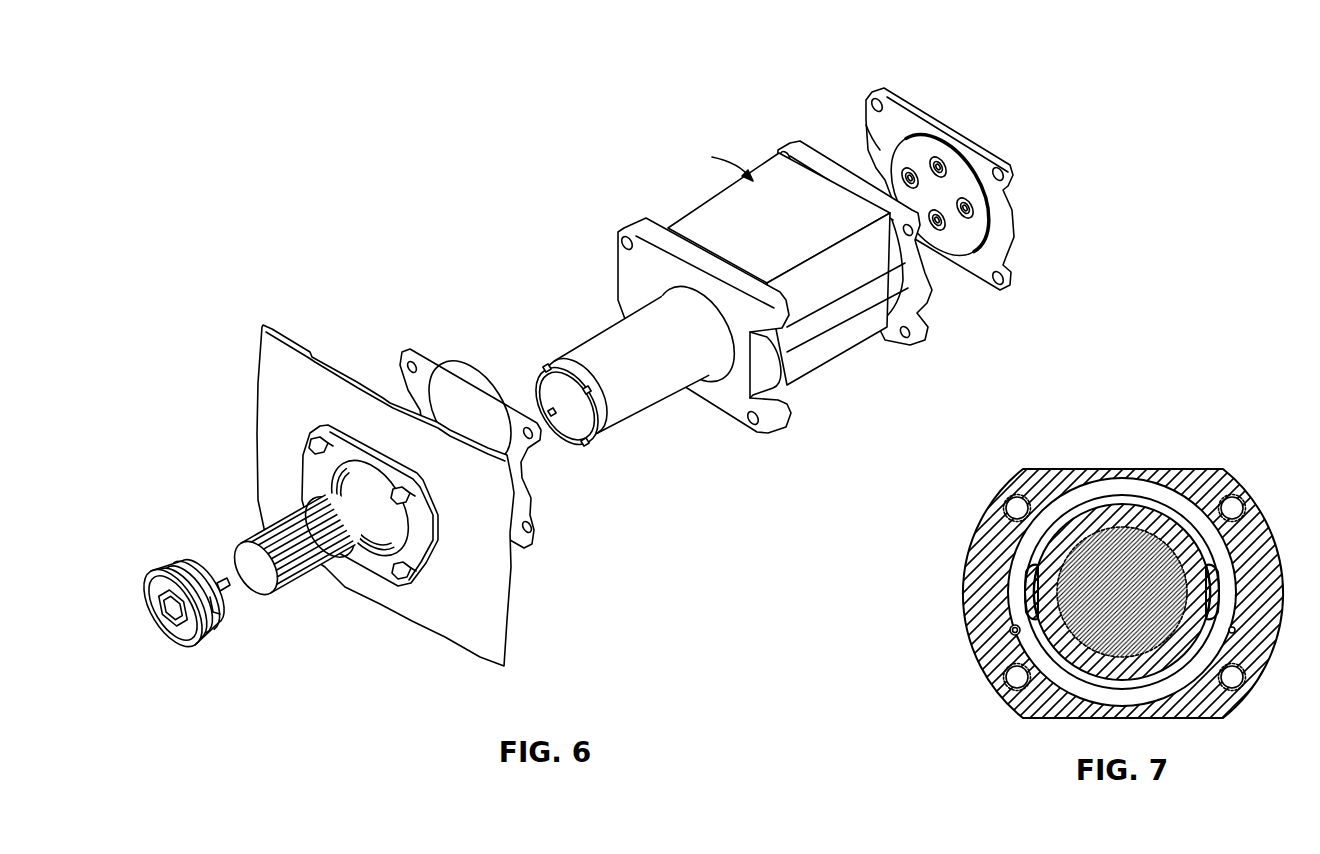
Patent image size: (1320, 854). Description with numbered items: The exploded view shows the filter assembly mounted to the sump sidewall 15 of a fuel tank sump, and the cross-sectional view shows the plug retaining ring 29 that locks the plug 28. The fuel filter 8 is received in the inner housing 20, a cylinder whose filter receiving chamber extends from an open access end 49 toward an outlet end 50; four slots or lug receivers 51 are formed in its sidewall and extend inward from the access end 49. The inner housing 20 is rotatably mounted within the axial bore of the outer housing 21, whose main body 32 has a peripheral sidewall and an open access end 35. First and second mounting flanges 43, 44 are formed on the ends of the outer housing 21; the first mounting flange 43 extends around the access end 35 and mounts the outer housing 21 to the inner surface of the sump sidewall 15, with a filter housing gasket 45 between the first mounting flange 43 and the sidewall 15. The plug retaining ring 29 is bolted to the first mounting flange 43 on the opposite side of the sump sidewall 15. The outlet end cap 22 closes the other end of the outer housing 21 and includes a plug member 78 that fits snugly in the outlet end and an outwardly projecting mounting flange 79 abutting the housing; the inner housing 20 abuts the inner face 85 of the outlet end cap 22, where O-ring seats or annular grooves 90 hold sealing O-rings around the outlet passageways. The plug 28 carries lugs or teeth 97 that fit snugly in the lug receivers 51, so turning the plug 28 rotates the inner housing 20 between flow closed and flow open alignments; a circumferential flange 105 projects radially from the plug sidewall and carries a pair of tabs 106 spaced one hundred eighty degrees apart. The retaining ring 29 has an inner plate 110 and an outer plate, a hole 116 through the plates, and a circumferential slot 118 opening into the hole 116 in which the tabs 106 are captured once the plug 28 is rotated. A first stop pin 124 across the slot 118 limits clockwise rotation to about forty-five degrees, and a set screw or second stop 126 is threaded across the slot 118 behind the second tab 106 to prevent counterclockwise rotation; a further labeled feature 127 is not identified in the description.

In FIG. 6, the fuel filter 8 is at (272, 528).
In FIG. 7, the fuel filter 8 is at (1122, 592).
In FIG. 6, the sump sidewall 15 is at (472, 628).
In FIG. 6, the inner housing 20 is at (597, 338).
In FIG. 6, the outer housing 21 is at (703, 212).
In FIG. 6, the outlet end cap 22 is at (990, 158).
In FIG. 6, the plug 28 is at (186, 652).
In FIG. 6, the plug retaining ring 29 is at (346, 431).
In FIG. 7, the plug retaining ring 29 is at (1028, 483).
In FIG. 6, the main body 32 is at (717, 163).
In FIG. 6, the access end 35 is at (780, 384).
In FIG. 6, the first mounting flange 43 is at (632, 223).
In FIG. 6, the second mounting flange 44 is at (916, 342).
In FIG. 6, the filter housing gasket 45 is at (538, 528).
In FIG. 6, the access end 49 is at (598, 424).
In FIG. 6, the outlet end 50 is at (668, 296).
In FIG. 6, the lug receivers 51 is at (545, 370).
In FIG. 6, the plug member 78 is at (978, 208).
In FIG. 6, the mounting flange 79 is at (896, 118).
In FIG. 6, the inner face 85 is at (956, 168).
In FIG. 6, the O-ring seats 90 is at (937, 162).
In FIG. 6, the lugs 97 is at (225, 586).
In FIG. 6, the circumferential flange 105 is at (160, 588).
In FIG. 6, the tabs 106 is at (233, 620).
In FIG. 7, the tabs 106 is at (1238, 588).
In FIG. 7, the inner plate 110 is at (1128, 486).
In FIG. 6, the hole 116 is at (392, 527).
In FIG. 6, the circumferential slot 118 is at (352, 565).
In FIG. 7, the first stop pin 124 is at (1240, 634).
In FIG. 7, the set screw 126 is at (1008, 630).
In FIG. 7, the hole 127 is at (1013, 634).